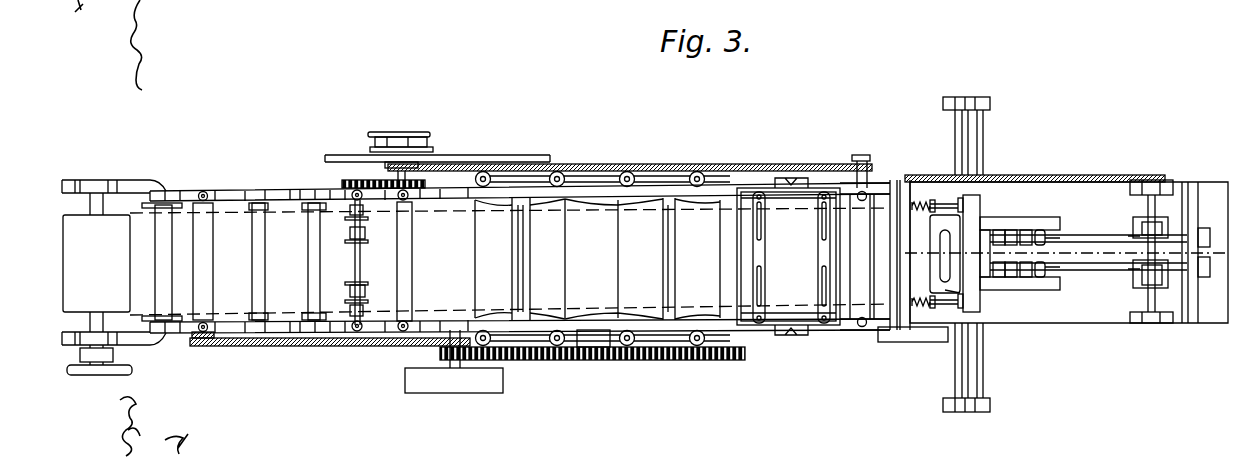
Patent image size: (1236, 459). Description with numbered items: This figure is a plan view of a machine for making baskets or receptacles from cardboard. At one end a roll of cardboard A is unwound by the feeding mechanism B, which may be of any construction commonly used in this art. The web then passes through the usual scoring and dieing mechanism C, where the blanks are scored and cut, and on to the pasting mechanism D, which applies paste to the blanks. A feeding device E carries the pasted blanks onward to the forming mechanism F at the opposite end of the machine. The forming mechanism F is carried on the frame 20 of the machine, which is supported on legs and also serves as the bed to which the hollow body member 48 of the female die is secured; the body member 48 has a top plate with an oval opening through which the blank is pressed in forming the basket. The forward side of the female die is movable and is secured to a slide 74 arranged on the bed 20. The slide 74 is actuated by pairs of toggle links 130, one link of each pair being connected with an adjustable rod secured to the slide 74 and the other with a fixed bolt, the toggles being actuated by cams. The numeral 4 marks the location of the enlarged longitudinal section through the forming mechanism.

The roll of cardboard A is at (96, 263).
The feeding mechanism B is at (178, 268).
The scoring and dieing mechanism C is at (690, 266).
The pasting mechanism D is at (788, 256).
The feeding device E is at (858, 210).
The forming mechanism F is at (1069, 251).
The section line 4- 4 is at (878, 260).
The slide 74 is at (1059, 252).
The toggle links 130 is at (1140, 258).
The frame 20 is at (1080, 299).
The hollow body member 48 is at (960, 290).